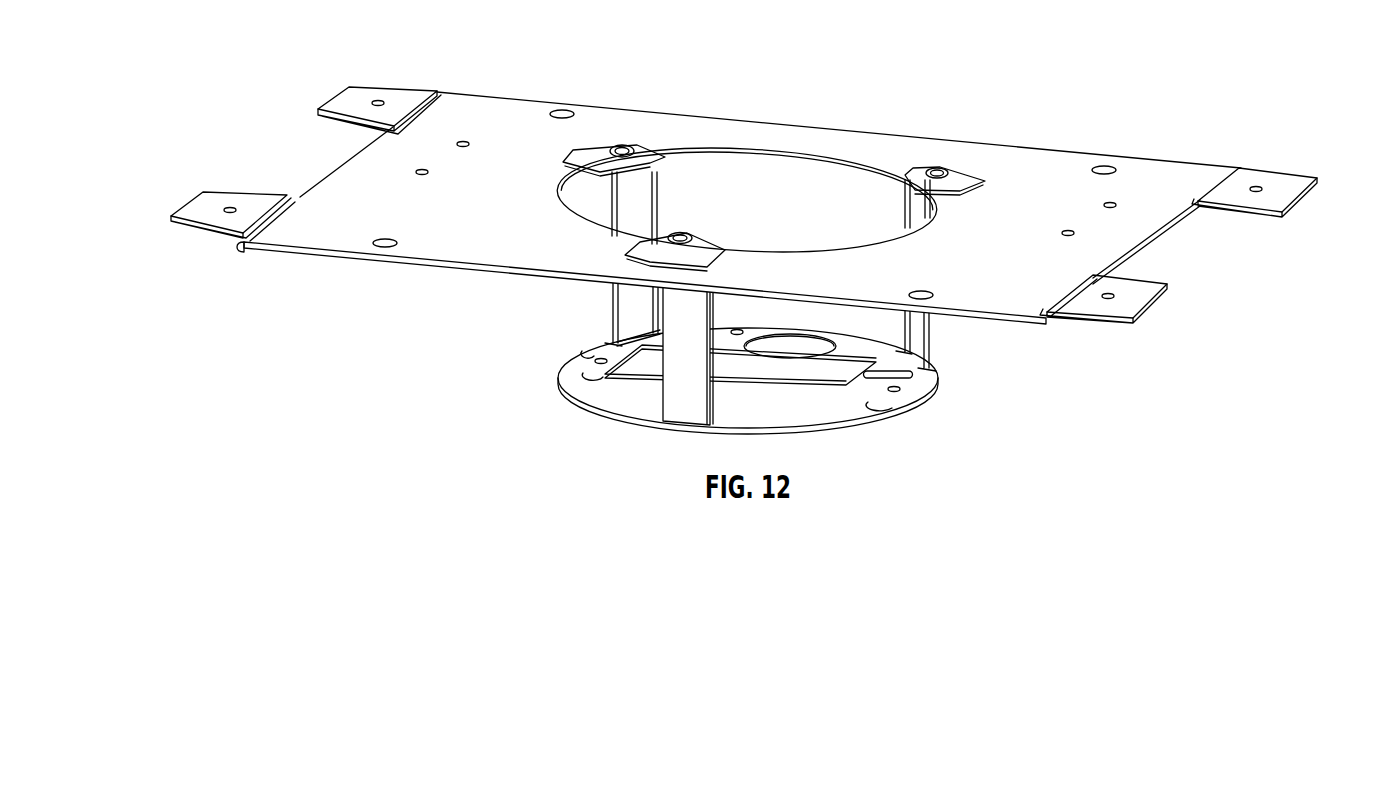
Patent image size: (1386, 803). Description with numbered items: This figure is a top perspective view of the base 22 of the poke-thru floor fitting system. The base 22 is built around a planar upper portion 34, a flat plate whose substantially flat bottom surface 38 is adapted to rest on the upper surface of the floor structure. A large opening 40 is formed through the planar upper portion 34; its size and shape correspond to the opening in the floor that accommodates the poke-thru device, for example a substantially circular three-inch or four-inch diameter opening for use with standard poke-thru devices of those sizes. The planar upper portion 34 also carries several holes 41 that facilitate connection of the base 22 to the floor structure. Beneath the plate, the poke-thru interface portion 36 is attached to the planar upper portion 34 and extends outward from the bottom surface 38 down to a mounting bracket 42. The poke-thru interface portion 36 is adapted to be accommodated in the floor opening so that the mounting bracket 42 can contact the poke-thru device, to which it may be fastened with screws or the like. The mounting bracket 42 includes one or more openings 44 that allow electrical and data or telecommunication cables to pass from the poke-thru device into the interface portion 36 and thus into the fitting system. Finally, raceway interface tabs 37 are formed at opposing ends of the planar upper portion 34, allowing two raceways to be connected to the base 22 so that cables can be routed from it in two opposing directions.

The base 22 is at (1158, 58).
The planar upper portion 34 is at (628, 104).
The poke-thru interface portion 36 is at (930, 340).
The raceway interface tabs 37 is at (318, 113).
The bottom surface 38 is at (1020, 330).
The opening 40 is at (806, 148).
The holes 41 is at (562, 111).
The mounting bracket 42 is at (935, 396).
The openings 44 is at (787, 358).